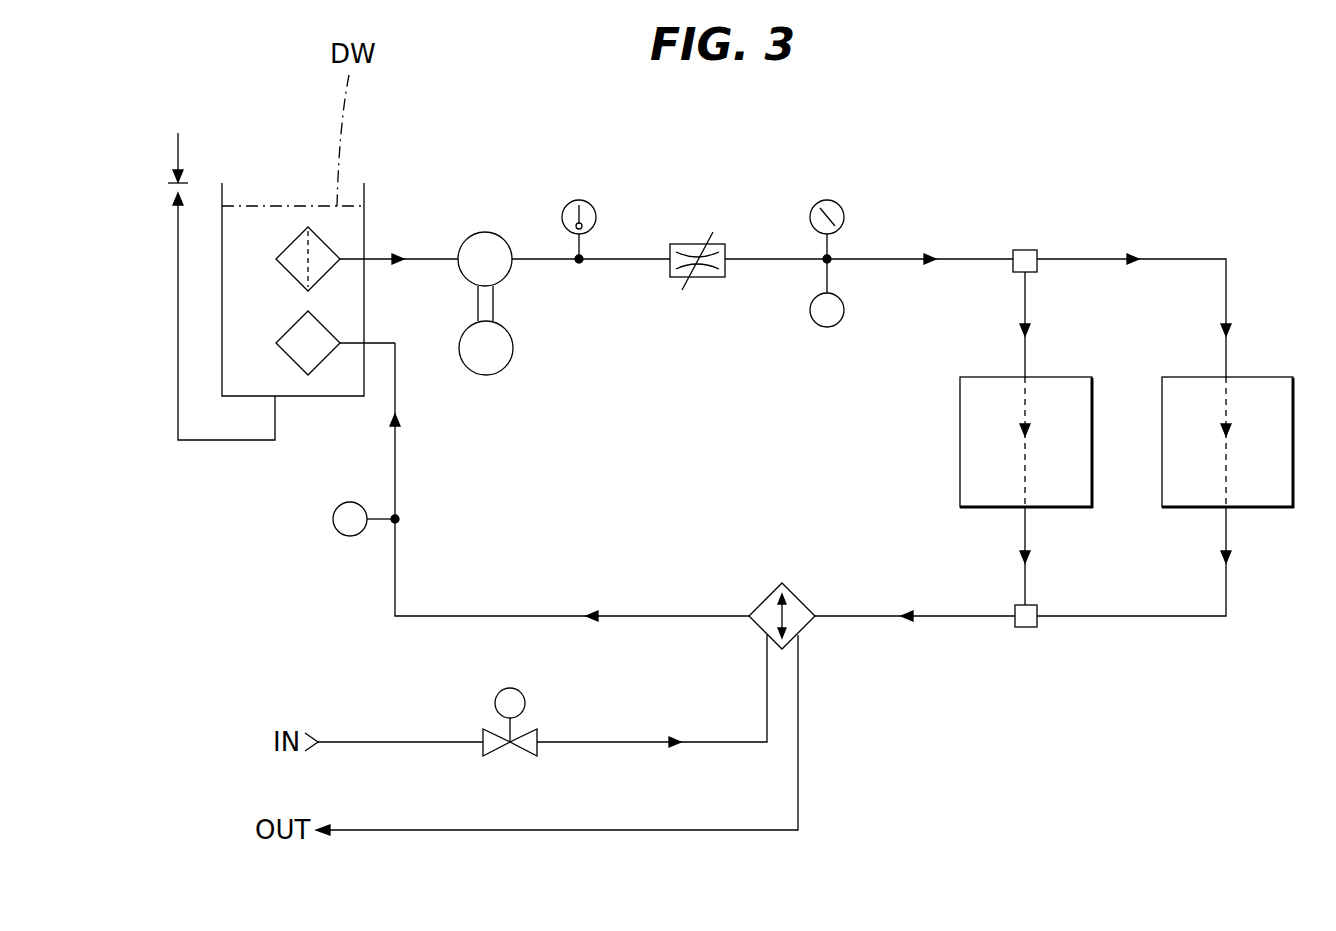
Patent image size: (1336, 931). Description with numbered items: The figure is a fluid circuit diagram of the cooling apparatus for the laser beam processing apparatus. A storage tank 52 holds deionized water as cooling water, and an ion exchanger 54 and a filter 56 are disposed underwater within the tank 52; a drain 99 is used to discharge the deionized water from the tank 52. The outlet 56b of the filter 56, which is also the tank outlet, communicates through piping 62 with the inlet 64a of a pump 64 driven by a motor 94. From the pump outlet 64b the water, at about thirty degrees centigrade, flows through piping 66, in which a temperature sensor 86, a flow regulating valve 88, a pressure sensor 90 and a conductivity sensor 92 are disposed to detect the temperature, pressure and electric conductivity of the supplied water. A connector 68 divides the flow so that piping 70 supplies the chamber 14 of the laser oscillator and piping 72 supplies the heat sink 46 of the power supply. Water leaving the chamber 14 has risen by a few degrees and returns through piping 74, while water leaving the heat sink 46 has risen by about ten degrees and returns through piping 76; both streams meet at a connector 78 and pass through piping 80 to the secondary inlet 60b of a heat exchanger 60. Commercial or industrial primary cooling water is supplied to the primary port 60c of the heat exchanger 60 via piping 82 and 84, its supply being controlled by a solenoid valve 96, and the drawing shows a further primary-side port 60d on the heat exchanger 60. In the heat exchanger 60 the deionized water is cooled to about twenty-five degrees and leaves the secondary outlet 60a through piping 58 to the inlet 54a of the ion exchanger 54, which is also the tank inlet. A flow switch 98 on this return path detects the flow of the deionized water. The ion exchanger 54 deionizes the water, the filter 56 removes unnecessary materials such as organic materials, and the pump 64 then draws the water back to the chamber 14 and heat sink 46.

The drain 99 is at (182, 181).
The storage tank 52 is at (364, 200).
The filter 56 is at (300, 233).
The ion exchanger 54 is at (325, 362).
The outlet of the filter 56b is at (430, 210).
The inlet of the ion exchanger 54a is at (447, 378).
The piping 62 is at (418, 262).
The pump 64 is at (484, 265).
The inlet of the pump 64a is at (460, 253).
The outlet of the pump 64b is at (508, 272).
The motor 94 is at (513, 348).
The temperature sensor 86 is at (588, 204).
The flow regulating valve 88 is at (690, 245).
The piping 66 is at (765, 262).
The pressure sensor 90 is at (836, 206).
The conductivity sensor 92 is at (845, 310).
The connector 68 is at (1032, 251).
The piping 70 is at (1028, 305).
The piping 72 is at (1228, 305).
The chamber 14 is at (1093, 430).
The heat sink 46 is at (1295, 430).
The piping 74 is at (1028, 528).
The piping 76 is at (1230, 528).
The connector 78 is at (1026, 630).
The piping 80 is at (955, 618).
The heat exchanger 60 is at (790, 610).
The secondary outlet of the heat exchanger 60a is at (757, 608).
The secondary inlet of the heat exchanger 60b is at (810, 606).
The primary port of the heat exchanger 60c is at (766, 634).
The heat exchanger port 60d is at (800, 634).
The piping 58 is at (397, 478).
The flow switch 98 is at (333, 520).
The solenoid valve 96 is at (522, 732).
The piping 82 is at (580, 745).
The piping 84 is at (580, 833).